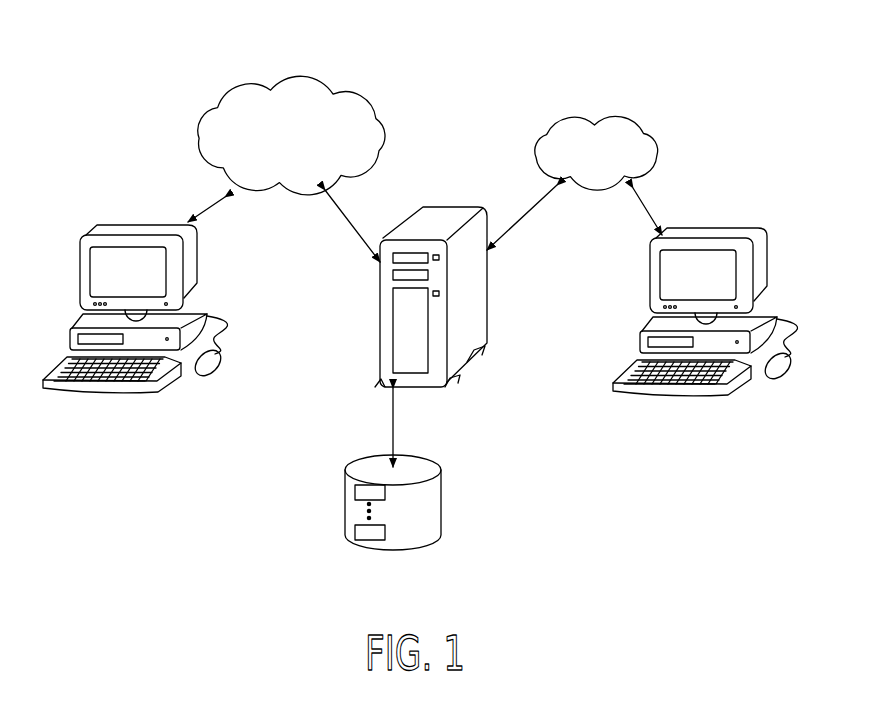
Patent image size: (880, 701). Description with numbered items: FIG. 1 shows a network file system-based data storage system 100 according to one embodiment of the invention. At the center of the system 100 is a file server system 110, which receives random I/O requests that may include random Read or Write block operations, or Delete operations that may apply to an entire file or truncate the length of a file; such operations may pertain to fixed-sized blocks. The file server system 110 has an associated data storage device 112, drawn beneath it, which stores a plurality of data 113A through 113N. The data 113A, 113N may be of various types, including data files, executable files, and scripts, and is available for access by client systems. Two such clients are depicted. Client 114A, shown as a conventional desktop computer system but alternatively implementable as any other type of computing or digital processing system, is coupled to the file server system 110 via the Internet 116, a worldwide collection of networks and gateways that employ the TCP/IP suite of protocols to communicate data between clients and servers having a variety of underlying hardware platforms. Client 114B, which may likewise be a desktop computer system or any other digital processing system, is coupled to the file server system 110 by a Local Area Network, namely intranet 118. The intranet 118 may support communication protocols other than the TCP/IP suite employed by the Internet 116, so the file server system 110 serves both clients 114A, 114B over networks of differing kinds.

The system 100 is at (108, 80).
The file server system 110 is at (488, 302).
The data storage device 112 is at (383, 502).
The data 113A is at (356, 488).
The data 113N is at (356, 526).
The client 114A is at (84, 201).
The client 114B is at (714, 210).
The Internet 116 is at (311, 164).
The intranet 118 is at (617, 181).